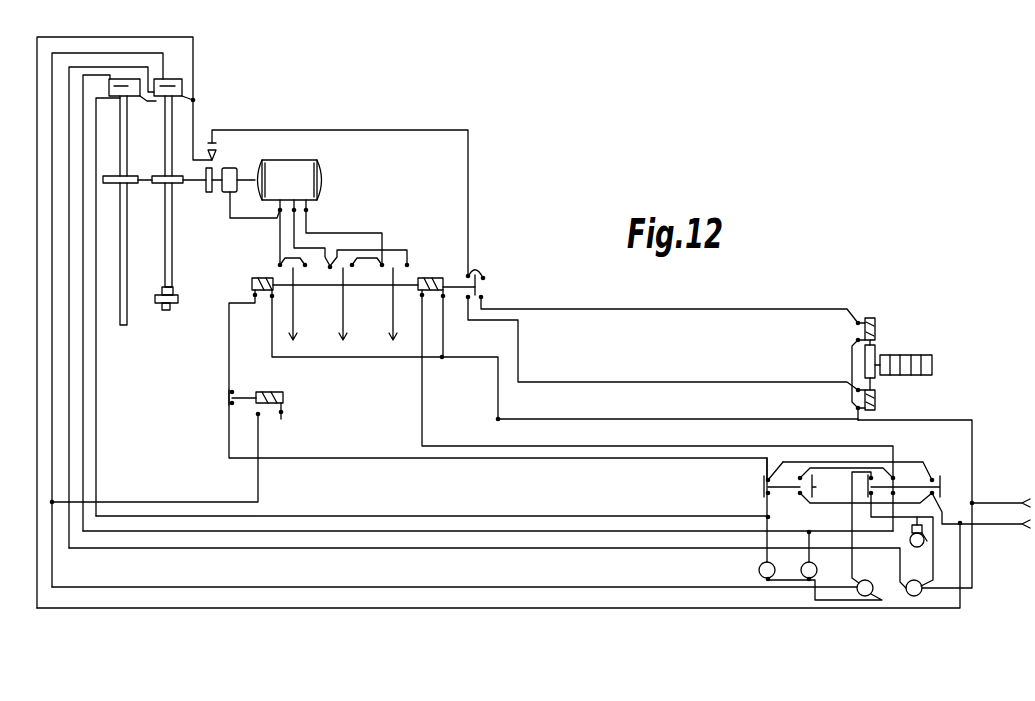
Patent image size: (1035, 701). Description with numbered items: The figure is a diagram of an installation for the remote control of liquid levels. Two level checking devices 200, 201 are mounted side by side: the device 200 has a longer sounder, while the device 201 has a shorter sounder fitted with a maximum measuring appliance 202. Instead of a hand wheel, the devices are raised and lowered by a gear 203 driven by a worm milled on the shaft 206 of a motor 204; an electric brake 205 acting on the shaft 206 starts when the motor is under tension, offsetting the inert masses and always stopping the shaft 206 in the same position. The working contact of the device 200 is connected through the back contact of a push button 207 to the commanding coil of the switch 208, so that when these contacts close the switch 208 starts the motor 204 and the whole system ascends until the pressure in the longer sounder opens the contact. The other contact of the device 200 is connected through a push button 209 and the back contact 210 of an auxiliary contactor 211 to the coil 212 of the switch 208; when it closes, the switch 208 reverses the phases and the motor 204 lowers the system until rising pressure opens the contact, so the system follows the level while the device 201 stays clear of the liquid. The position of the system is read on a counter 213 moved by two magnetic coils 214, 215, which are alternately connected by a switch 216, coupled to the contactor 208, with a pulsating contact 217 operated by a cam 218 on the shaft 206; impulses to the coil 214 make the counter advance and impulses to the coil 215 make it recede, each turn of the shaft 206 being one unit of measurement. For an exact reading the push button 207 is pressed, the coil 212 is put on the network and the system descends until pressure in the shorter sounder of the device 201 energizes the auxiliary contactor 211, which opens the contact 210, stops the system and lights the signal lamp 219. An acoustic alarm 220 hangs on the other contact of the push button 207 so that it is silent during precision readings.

The level checking device 200 is at (127, 282).
The level checking device 201 is at (173, 249).
The maximum measuring appliance 202 is at (173, 288).
The gear 203 is at (152, 175).
The motor 204 is at (287, 167).
The electric brake 205 is at (233, 168).
The shaft 206 is at (143, 183).
The push button 207 is at (877, 495).
The switch 208 is at (307, 308).
The push button 209 is at (764, 483).
The back contact 210 is at (225, 394).
The auxiliary contactor 211 is at (283, 390).
The coil 212 is at (252, 284).
The counter 213 is at (905, 355).
The magnetic coil 214 is at (877, 325).
The magnetic coil 215 is at (877, 405).
The switch 216 is at (475, 288).
The pulsating contact 217 is at (215, 157).
The cam 218 is at (205, 195).
The signal lamp 219 is at (772, 577).
The acoustic alarm 220 is at (918, 547).